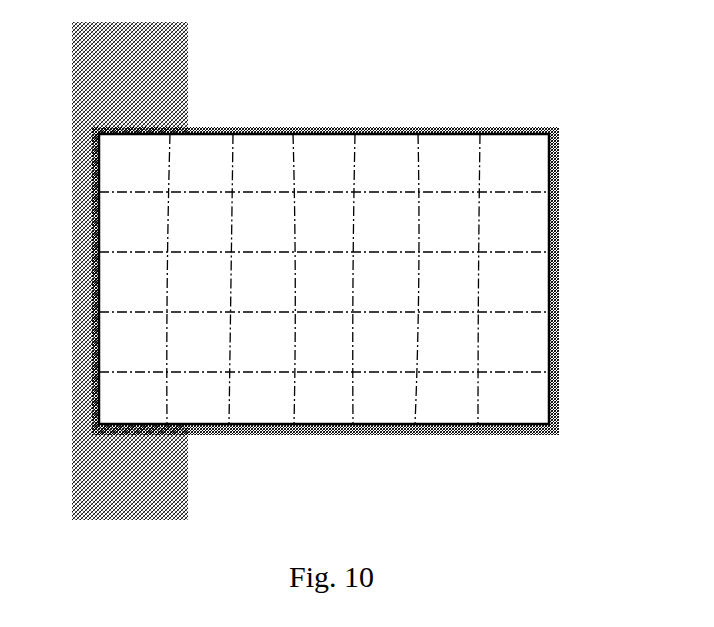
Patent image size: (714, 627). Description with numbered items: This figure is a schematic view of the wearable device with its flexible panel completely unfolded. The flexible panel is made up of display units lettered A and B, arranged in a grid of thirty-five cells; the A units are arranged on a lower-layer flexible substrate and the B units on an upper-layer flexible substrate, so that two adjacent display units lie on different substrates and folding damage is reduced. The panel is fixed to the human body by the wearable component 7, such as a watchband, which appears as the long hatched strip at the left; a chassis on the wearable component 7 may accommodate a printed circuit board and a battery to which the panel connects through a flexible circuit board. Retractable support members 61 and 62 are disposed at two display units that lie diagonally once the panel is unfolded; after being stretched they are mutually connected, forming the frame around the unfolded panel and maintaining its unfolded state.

The wearable component 7 is at (71, 57).
The retractable support member 61 is at (189, 91).
The retractable support member 62 is at (560, 403).